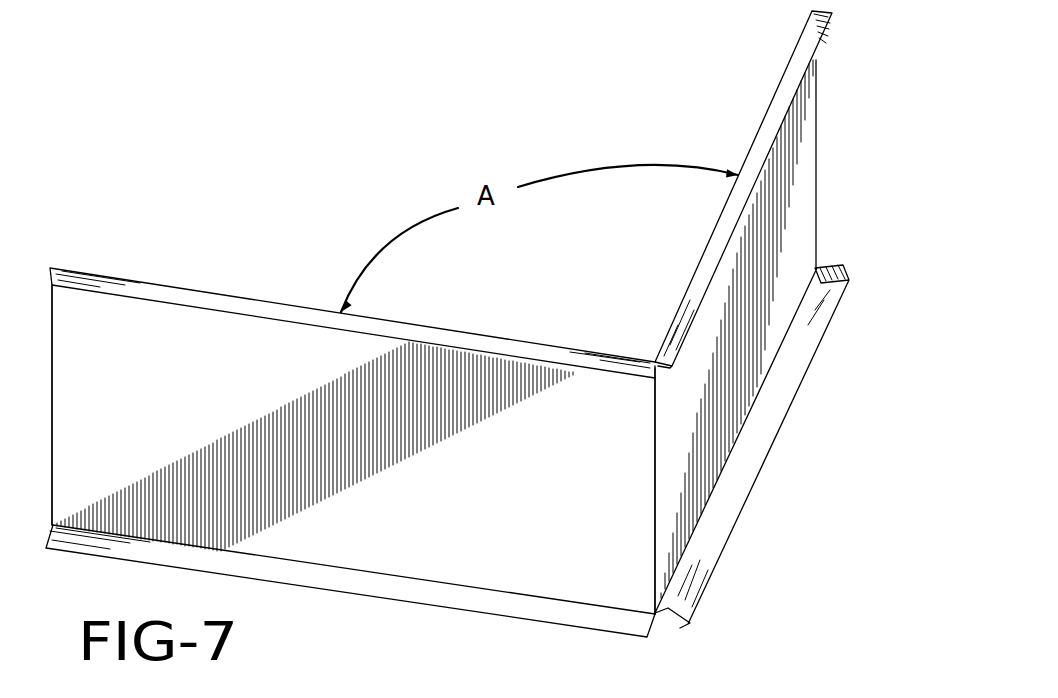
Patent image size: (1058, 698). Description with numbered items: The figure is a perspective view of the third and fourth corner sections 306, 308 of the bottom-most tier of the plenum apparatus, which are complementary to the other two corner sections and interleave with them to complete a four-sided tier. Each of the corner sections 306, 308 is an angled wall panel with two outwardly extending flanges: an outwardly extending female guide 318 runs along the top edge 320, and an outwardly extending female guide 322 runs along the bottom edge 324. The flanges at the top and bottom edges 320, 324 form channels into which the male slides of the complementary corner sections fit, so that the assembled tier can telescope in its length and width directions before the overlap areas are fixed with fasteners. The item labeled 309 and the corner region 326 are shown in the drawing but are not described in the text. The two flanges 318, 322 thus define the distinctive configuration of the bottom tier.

The top edge 320 is at (190, 292).
The female guide 318 is at (270, 312).
The corner panel 309 is at (655, 510).
The corner joint 326 is at (657, 375).
The female guide 322 is at (320, 590).
The bottom edge 324 is at (343, 572).
The third corner section 306 is at (456, 450).
The fourth corner section 308 is at (623, 572).